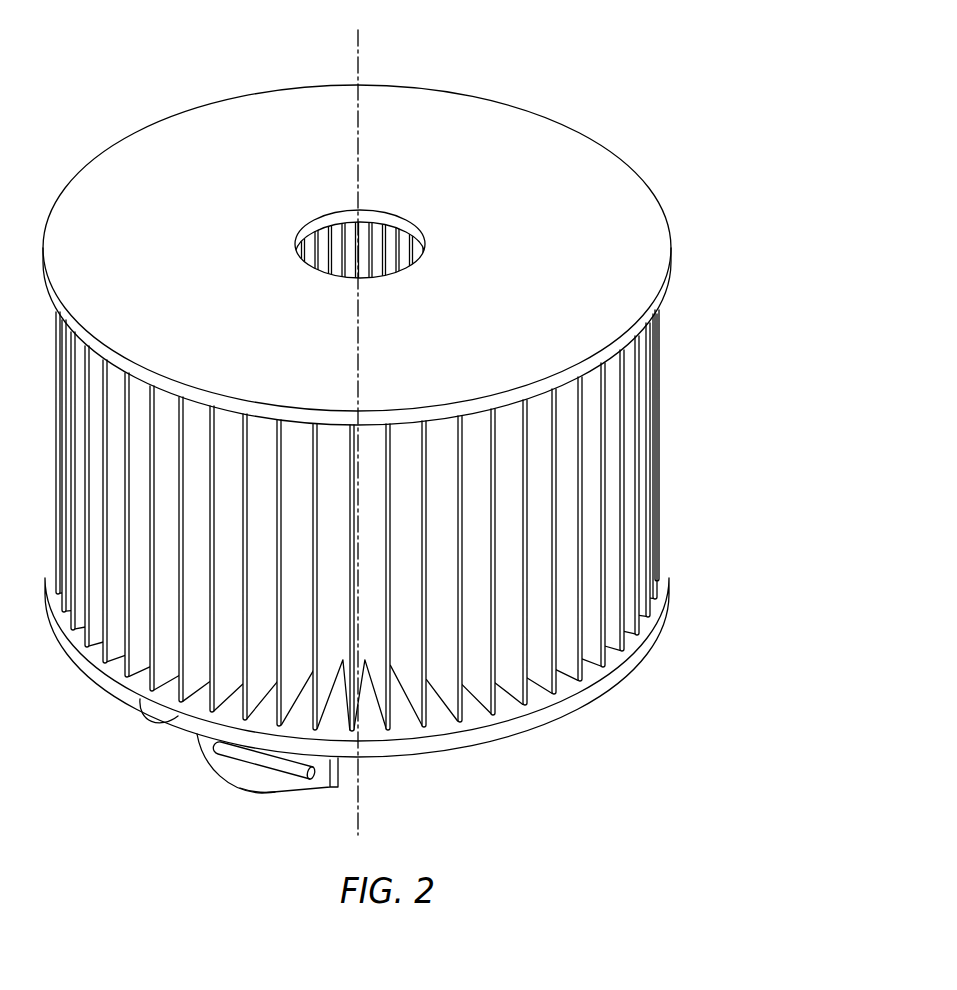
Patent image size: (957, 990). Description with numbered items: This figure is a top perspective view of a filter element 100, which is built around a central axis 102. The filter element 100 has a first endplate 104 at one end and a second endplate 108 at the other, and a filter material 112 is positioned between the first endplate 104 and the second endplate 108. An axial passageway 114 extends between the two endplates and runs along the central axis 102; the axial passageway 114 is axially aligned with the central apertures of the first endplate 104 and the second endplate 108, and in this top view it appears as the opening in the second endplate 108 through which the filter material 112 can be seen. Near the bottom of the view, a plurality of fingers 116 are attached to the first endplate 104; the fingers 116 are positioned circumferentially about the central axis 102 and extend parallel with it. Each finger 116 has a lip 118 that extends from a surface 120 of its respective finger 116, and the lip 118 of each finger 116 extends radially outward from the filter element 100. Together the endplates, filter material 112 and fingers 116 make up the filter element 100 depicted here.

The filter element 100 is at (412, 444).
The central axis 102 is at (362, 47).
The first endplate 104 is at (618, 682).
The second endplate 108 is at (412, 231).
The filter material 112 is at (665, 457).
The axial passageway 114 is at (327, 183).
The finger 116 is at (147, 723).
The lip 118 is at (297, 778).
The surface 120 is at (240, 780).